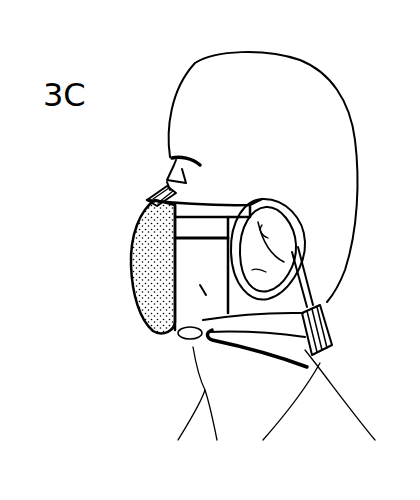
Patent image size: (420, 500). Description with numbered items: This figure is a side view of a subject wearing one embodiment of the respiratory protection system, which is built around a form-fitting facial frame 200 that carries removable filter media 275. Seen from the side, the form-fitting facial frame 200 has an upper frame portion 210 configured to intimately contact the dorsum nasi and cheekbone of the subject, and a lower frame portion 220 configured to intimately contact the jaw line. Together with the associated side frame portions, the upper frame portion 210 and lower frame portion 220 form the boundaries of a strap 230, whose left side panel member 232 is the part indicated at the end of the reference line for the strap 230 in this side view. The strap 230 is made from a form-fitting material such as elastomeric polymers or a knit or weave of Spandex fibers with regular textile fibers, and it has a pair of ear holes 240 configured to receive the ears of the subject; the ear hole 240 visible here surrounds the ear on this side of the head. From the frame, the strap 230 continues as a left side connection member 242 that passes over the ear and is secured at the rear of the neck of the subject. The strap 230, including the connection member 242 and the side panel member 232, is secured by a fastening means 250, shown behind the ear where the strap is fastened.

The form-fitting facial frame 200 is at (118, 266).
The upper frame portion 210 is at (150, 200).
The lower frame portion 220 is at (178, 327).
The strap 230 is at (203, 290).
The left side panel member 232 is at (200, 240).
The ear hole 240 is at (255, 227).
The left side connection member 242 is at (258, 358).
The fastening means 250 is at (303, 315).
The removable filter media 275 is at (157, 300).